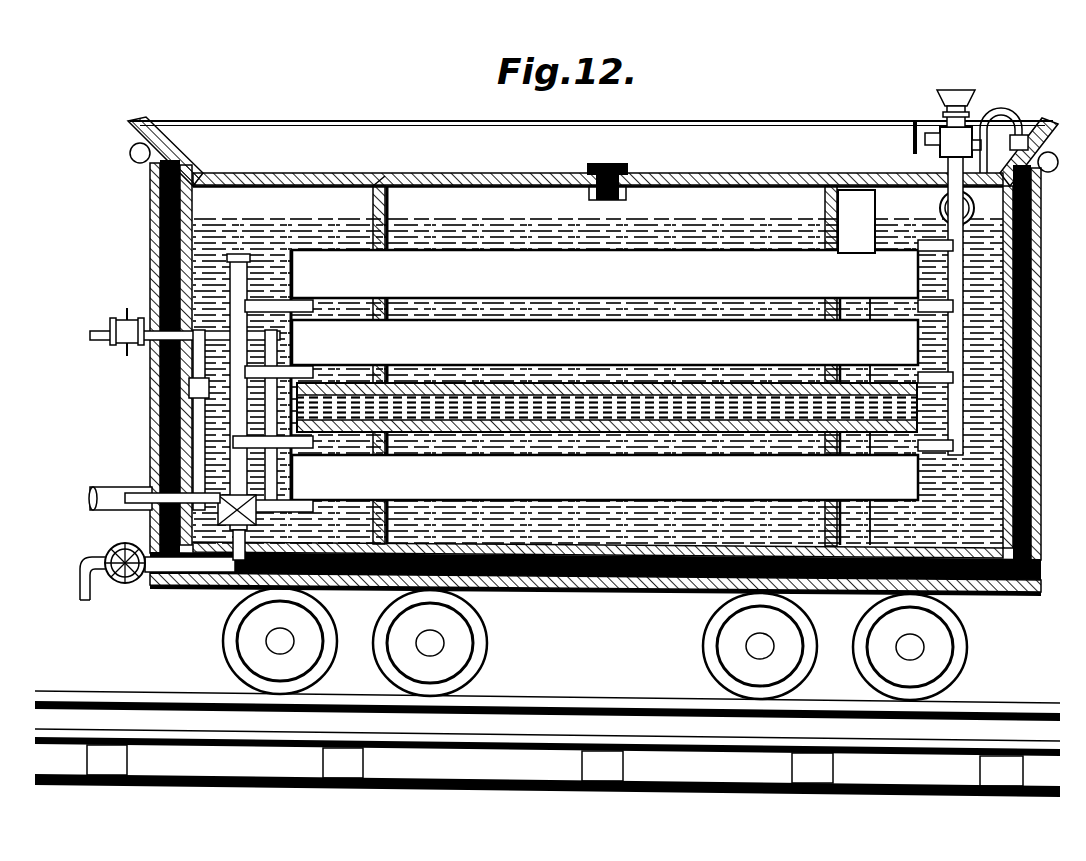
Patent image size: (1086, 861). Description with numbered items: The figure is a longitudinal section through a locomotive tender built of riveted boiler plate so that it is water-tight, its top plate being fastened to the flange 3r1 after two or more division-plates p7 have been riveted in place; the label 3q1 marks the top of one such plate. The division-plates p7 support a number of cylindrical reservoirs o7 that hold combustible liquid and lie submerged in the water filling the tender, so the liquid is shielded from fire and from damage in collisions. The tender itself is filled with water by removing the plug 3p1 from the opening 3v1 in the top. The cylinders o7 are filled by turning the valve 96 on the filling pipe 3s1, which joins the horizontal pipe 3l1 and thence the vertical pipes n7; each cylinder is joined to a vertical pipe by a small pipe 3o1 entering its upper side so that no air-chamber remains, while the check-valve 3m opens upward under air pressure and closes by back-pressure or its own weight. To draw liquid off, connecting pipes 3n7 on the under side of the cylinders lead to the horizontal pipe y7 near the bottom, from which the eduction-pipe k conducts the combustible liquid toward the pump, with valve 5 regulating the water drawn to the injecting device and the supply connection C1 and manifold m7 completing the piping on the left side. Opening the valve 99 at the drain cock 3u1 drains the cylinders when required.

The division-plate p7 is at (605, 366).
The partition top 3q1 is at (405, 166).
The cylindrical reservoir o7 is at (604, 375).
The plug 3p1 is at (596, 170).
The opening 3v1 is at (581, 200).
The supply pipe C1 is at (182, 323).
The valve 5 is at (119, 343).
The inlet manifold m7 is at (226, 392).
The eduction-pipe k is at (233, 420).
The connecting pipe 3n7 is at (273, 406).
The horizontal pipe y7 is at (172, 506).
The drain cock 3u1 is at (150, 556).
The valve 99 is at (107, 587).
The flange 3r1 is at (529, 180).
The vertical pipe n7 is at (917, 306).
The small pipe 3o1 is at (930, 345).
The filling pipe 3s1 is at (937, 133).
The valve 96 is at (901, 126).
The horizontal pipe 3l1 is at (1004, 128).
The check-valve 3m is at (1050, 152).